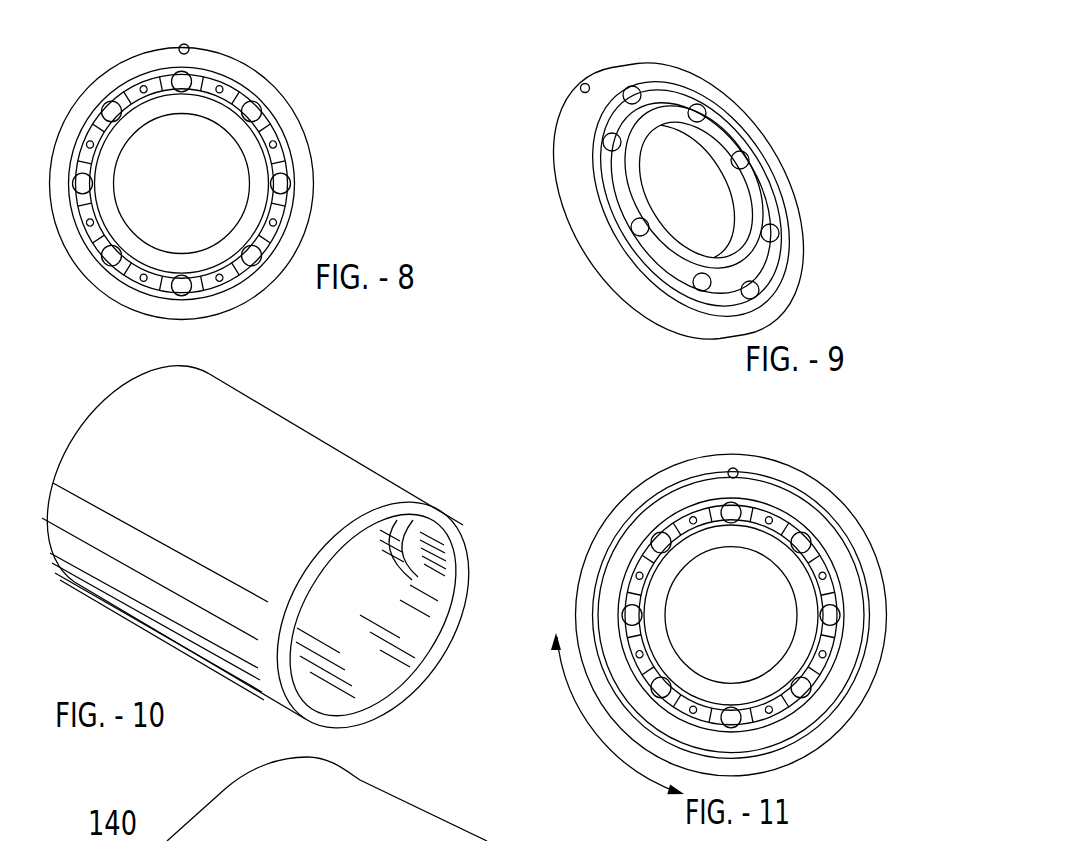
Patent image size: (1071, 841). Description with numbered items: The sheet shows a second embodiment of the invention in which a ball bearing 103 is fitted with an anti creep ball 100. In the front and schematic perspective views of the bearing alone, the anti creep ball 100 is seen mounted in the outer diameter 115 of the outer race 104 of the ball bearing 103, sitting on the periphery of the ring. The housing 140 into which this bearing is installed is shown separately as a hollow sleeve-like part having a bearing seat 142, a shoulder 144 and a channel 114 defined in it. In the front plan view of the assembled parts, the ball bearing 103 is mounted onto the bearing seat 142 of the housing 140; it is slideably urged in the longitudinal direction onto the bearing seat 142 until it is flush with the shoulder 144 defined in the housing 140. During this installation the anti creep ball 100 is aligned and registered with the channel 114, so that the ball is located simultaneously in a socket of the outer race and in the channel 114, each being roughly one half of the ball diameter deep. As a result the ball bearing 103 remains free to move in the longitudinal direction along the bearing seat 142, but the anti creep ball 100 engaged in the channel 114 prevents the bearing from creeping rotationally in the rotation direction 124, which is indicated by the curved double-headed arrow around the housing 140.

In FIG. 8, the anti creep ball 100 is at (187, 46).
In FIG. 9, the anti creep ball 100 is at (582, 86).
In FIG. 11, the anti creep ball 100 is at (736, 468).
In FIG. 8, the ball bearing 103 is at (240, 188).
In FIG. 9, the ball bearing 103 is at (701, 176).
In FIG. 8, the outer race 104 is at (307, 188).
In FIG. 8, the outer diameter 115 is at (233, 315).
In FIG. 11, the channel 114 is at (673, 472).
In FIG. 10, the housing 140 is at (302, 564).
In FIG. 11, the housing 140 is at (582, 589).
In FIG. 10, the bearing seat 142 is at (428, 668).
In FIG. 10, the shoulder 144 is at (463, 550).
In FIG. 11, the rotation direction 124 is at (582, 725).